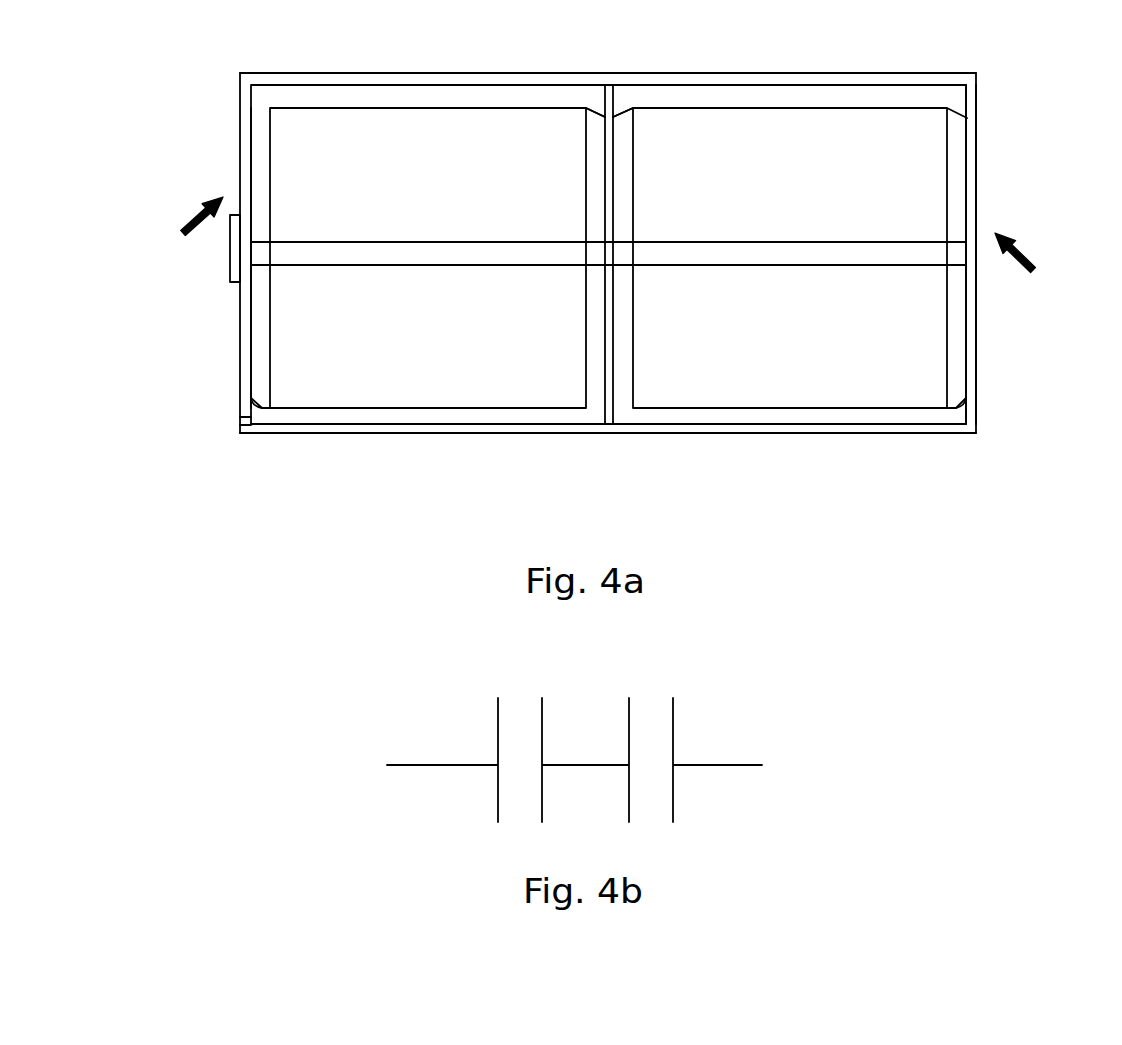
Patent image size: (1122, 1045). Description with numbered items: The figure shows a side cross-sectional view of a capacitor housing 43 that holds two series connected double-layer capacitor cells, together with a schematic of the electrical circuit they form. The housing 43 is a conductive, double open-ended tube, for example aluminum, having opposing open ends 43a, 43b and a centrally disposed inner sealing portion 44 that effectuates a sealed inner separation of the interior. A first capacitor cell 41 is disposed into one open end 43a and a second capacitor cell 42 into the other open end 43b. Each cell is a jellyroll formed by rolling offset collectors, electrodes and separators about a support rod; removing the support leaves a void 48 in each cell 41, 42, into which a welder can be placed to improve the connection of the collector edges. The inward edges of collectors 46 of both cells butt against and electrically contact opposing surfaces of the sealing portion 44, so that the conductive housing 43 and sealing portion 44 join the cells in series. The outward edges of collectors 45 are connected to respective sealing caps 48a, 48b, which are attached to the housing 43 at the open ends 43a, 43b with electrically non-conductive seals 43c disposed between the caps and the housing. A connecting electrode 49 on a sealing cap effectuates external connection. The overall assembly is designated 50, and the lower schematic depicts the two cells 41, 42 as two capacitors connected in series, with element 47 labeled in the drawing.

In FIG. 4A, the first capacitor cell 41 is at (380, 387).
In FIG. 4B, the first capacitor cell 41 is at (497, 740).
In FIG. 4A, the second capacitor cell 42 is at (742, 392).
In FIG. 4B, the second capacitor cell 42 is at (677, 725).
In FIG. 4A, the capacitor housing 43 is at (465, 432).
In FIG. 4A, the open end 43a is at (230, 260).
In FIG. 4A, the open end 43b is at (1040, 254).
In FIG. 4A, the electrically non-conductive seal 43c is at (247, 88).
In FIG. 4A, the sealing portion 44 is at (607, 298).
In FIG. 4A, the outward edges of collectors 45 is at (953, 393).
In FIG. 4A, the inward edges of collectors 46 is at (592, 172).
In FIG. 4A, the bottom wall 47 is at (603, 390).
In FIG. 4A, the void 48 is at (490, 255).
In FIG. 4A, the sealing cap 48a is at (250, 115).
In FIG. 4A, the sealing cap 48b is at (972, 142).
In FIG. 4A, the connecting electrode 49 is at (257, 350).
In FIG. 4A, the capacitor assembly 50 is at (1105, 432).